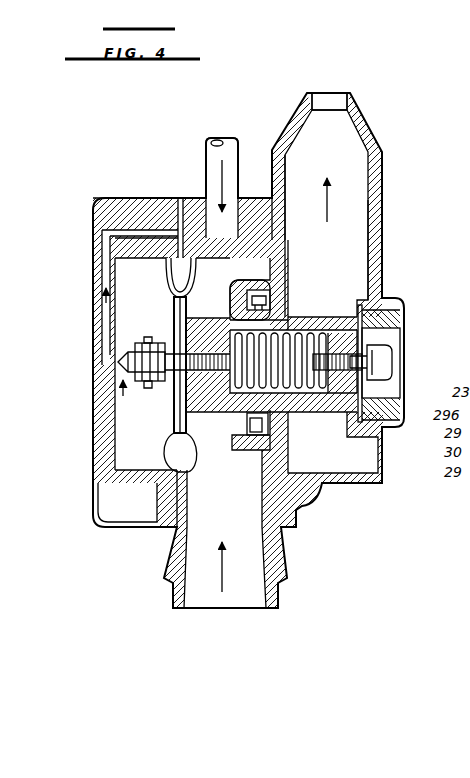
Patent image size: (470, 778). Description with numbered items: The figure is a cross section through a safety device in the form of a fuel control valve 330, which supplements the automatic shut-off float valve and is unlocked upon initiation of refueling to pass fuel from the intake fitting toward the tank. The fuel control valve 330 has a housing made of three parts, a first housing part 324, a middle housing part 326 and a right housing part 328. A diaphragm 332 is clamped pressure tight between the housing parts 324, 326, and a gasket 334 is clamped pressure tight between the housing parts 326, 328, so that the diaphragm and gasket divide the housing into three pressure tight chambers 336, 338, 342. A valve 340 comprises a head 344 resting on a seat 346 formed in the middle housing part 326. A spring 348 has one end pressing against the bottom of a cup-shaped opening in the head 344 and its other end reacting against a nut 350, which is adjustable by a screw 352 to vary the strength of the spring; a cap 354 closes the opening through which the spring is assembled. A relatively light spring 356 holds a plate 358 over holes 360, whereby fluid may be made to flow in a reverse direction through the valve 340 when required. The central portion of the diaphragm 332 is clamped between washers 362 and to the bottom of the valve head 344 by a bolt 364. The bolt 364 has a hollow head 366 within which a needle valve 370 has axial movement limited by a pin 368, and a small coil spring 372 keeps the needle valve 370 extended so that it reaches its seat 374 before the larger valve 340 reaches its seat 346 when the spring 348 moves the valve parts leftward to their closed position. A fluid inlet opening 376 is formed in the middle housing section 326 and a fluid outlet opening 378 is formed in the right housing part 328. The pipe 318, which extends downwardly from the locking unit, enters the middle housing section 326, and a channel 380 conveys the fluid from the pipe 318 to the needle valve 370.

The pipe 318 is at (222, 141).
The housing part 324 is at (108, 198).
The middle housing part 326 is at (268, 197).
The right housing part 328 is at (383, 217).
The fuel control valve 330 is at (172, 121).
The diaphragm 332 is at (168, 199).
The gasket 334 is at (273, 200).
The chamber 336 is at (118, 451).
The chamber 338 is at (180, 199).
The valve 340 is at (300, 278).
The chamber 342 is at (362, 250).
The head 344 is at (292, 294).
The seat 346 is at (262, 471).
The spring 348 is at (300, 332).
The nut 350 is at (352, 400).
The screw 352 is at (393, 344).
The cap 354 is at (405, 323).
The light spring 356 is at (220, 414).
The plate 358 is at (250, 447).
The holes 360 is at (283, 422).
The washers 362 is at (171, 294).
The bolt 364 is at (168, 322).
The hollow head 366 is at (176, 405).
The pin 368 is at (143, 354).
The needle valve 370 is at (131, 399).
The small coil spring 372 is at (152, 345).
The seat 374 is at (118, 373).
The fluid inlet opening 376 is at (238, 610).
The fluid outlet opening 378 is at (322, 118).
The channel 380 is at (113, 246).